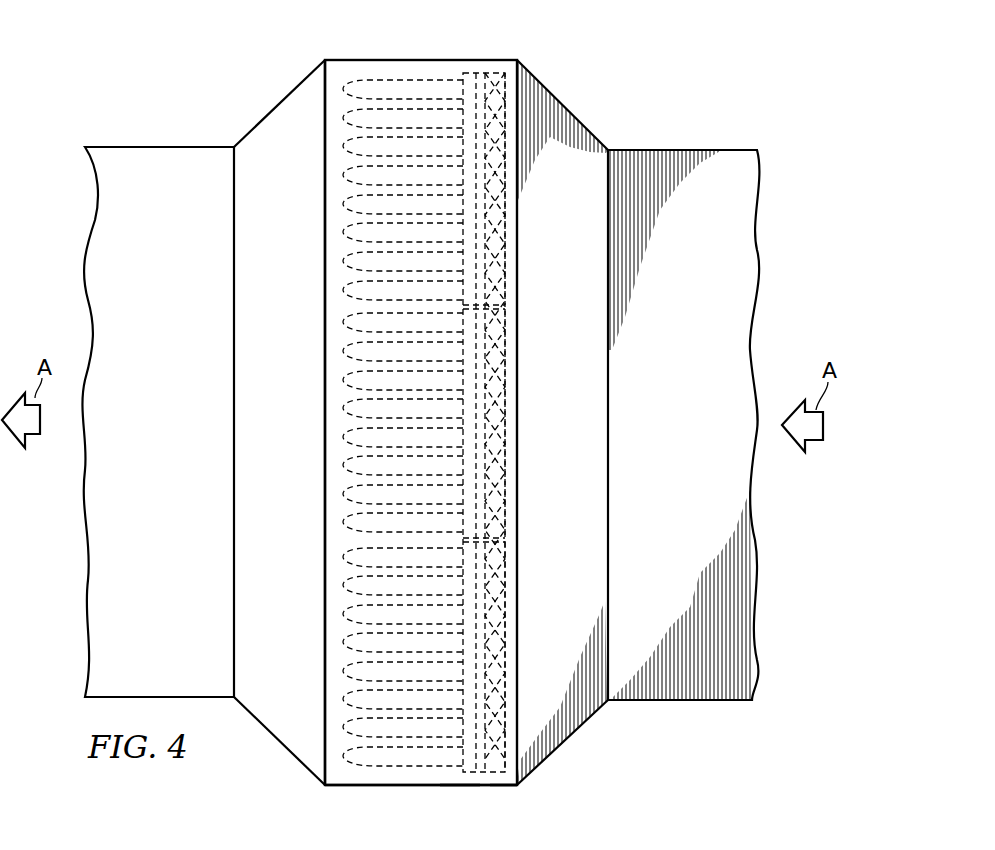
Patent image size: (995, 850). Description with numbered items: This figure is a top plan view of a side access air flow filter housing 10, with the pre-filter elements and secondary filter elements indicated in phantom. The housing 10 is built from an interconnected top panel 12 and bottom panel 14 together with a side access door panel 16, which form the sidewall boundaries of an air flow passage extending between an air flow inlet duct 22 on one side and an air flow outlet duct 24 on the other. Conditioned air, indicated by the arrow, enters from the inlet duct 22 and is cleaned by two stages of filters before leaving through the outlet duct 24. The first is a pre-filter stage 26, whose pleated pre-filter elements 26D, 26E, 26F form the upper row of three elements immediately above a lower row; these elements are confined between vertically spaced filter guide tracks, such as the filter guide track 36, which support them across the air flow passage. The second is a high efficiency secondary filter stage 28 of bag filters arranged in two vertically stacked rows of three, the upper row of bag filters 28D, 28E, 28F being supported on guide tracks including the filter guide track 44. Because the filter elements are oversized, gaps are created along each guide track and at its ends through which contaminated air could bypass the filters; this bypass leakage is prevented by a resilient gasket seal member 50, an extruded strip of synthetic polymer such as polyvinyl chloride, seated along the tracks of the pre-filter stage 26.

The side access air flow filter housing 10 is at (142, 113).
The top panel 12 is at (438, 60).
The bottom panel 14 is at (405, 785).
The side access door panel 16 is at (330, 82).
The air flow inlet duct 22 is at (760, 268).
The air flow outlet duct 24 is at (85, 262).
The pre-filter stage 26 is at (524, 392).
The pleated pre-filter element 26D is at (508, 640).
The pleated pre-filter element 26E is at (508, 455).
The pleated pre-filter element 26F is at (508, 225).
The high efficiency secondary filter stage 28 is at (363, 392).
The bag filter 28D is at (345, 613).
The bag filter 28E is at (345, 380).
The bag filter 28F is at (345, 172).
The filter guide track 36 is at (505, 849).
The filter guide track 44 is at (450, 849).
The resilient gasket seal member 50 is at (502, 246).